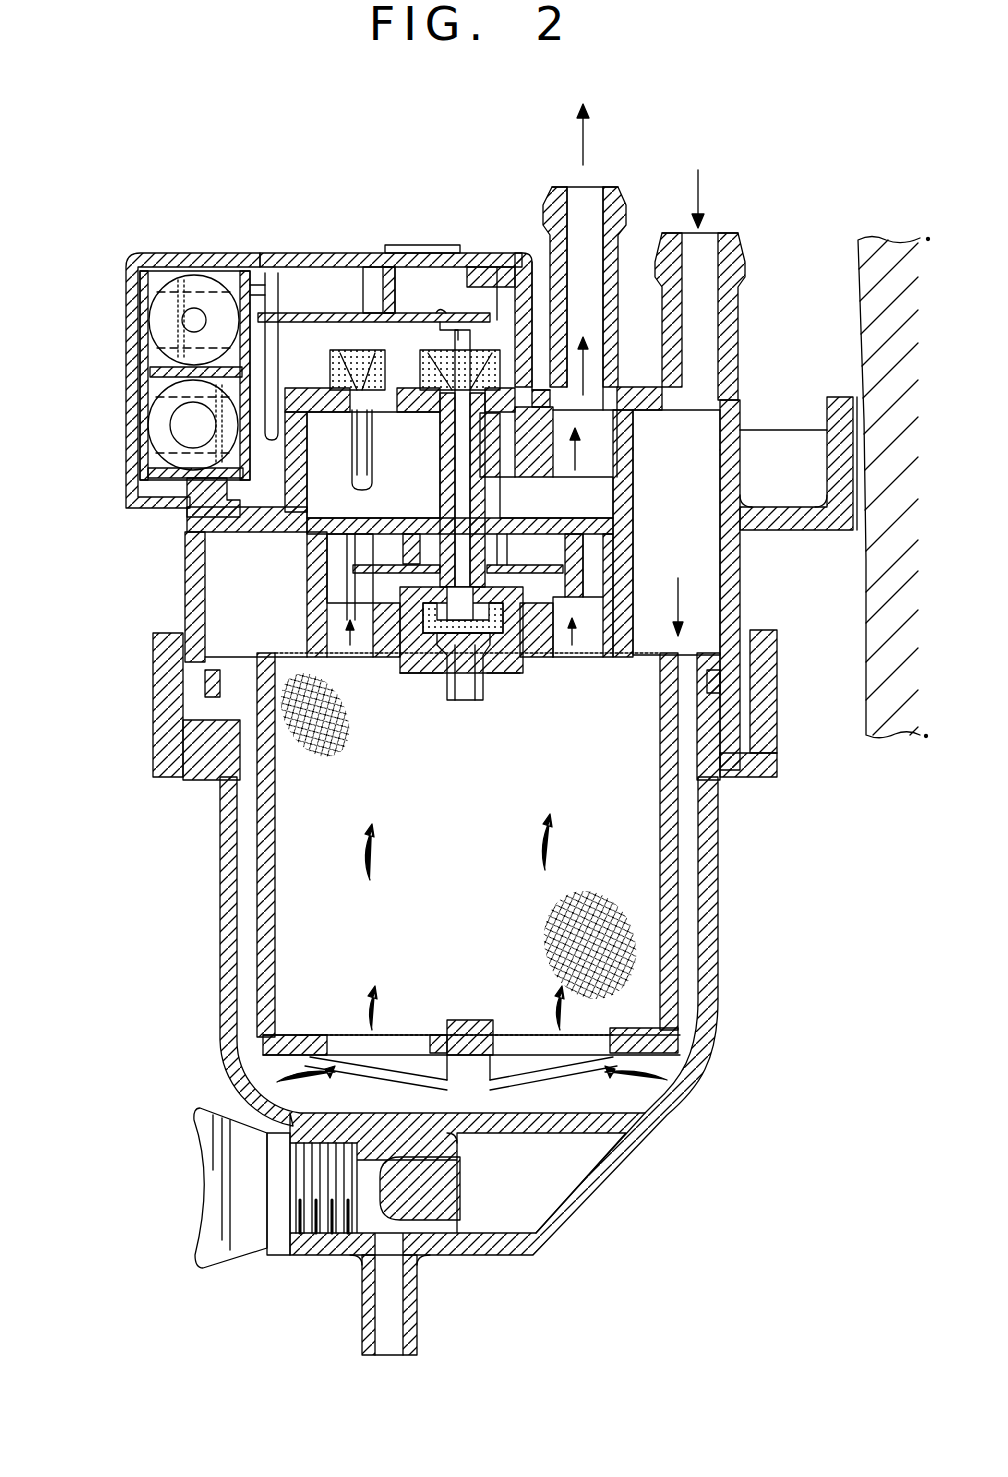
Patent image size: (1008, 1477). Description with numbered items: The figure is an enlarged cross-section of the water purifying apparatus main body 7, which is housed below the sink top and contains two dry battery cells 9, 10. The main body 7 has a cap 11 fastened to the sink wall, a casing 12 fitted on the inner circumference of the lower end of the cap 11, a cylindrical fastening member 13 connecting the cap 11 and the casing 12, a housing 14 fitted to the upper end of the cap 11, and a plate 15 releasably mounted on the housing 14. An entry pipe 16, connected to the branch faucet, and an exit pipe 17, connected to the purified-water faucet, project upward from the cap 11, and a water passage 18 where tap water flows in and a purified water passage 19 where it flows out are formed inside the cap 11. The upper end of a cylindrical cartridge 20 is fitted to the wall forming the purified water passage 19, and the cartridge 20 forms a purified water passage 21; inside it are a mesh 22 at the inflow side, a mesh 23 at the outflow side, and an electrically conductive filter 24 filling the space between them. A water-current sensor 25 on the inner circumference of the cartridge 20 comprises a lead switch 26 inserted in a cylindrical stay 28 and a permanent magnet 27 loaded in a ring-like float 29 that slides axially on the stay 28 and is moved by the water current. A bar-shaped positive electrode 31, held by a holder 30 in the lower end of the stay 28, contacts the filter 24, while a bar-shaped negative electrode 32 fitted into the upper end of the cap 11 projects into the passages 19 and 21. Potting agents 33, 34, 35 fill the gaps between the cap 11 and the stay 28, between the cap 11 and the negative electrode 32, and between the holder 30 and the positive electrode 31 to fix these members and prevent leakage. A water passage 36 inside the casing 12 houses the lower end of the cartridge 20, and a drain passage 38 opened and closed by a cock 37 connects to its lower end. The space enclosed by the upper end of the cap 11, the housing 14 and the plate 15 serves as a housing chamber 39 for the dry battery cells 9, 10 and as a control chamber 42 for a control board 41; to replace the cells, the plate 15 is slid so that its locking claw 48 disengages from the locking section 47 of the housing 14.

The water purifying apparatus main body 7 is at (140, 250).
The dry battery cell 9 is at (165, 318).
The dry battery cell 10 is at (160, 425).
The cap 11 is at (748, 393).
The casing 12 is at (718, 882).
The cylindrical fastening member 13 is at (780, 733).
The housing 14 is at (538, 300).
The plate 15 is at (302, 313).
The entry pipe 16 is at (740, 288).
The exit pipe 17 is at (620, 268).
The water passage 18 is at (715, 430).
The purified water passage 19 is at (605, 430).
The cylindrical cartridge 20 is at (680, 835).
The purified water passage 21 is at (607, 612).
The mesh 22 is at (665, 1040).
The mesh 23 is at (604, 660).
The electrically conductive filter 24 is at (640, 930).
The water-current sensor 25 is at (215, 580).
The lead switch 26 is at (350, 445).
The permanent magnet 27 is at (360, 590).
The cylindrical stay 28 is at (400, 367).
The ring-like float 29 is at (602, 560).
The holder 30 is at (432, 675).
The positive electrode 31 is at (465, 702).
The negative electrode 32 is at (200, 495).
The potting agent 33 is at (433, 353).
The potting agent 34 is at (352, 360).
The potting agent 35 is at (183, 652).
The water passage 36 is at (625, 1120).
The cock 37 is at (230, 1245).
The drain passage 38 is at (393, 1300).
The housing chamber 39 is at (148, 338).
The control board 41 is at (262, 287).
The control chamber 42 is at (262, 255).
The locking section 47 is at (468, 335).
The locking claw 48 is at (518, 262).